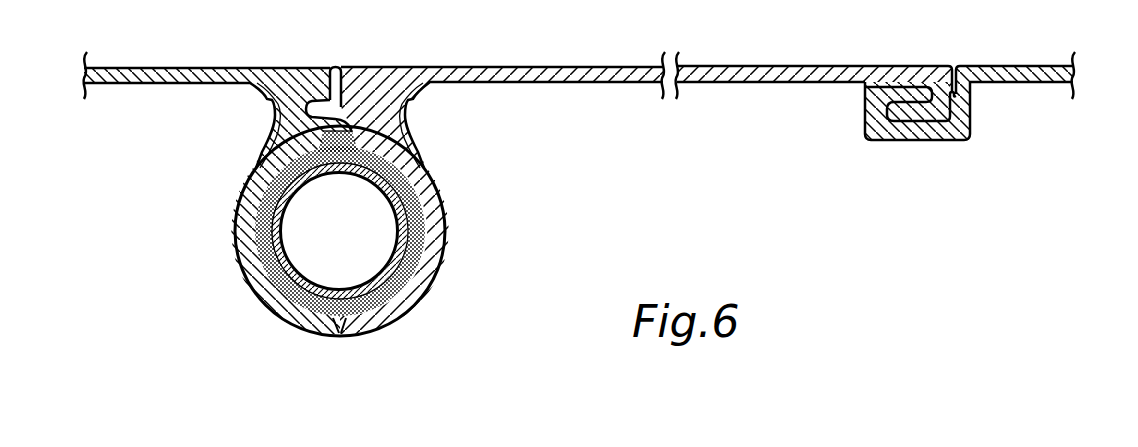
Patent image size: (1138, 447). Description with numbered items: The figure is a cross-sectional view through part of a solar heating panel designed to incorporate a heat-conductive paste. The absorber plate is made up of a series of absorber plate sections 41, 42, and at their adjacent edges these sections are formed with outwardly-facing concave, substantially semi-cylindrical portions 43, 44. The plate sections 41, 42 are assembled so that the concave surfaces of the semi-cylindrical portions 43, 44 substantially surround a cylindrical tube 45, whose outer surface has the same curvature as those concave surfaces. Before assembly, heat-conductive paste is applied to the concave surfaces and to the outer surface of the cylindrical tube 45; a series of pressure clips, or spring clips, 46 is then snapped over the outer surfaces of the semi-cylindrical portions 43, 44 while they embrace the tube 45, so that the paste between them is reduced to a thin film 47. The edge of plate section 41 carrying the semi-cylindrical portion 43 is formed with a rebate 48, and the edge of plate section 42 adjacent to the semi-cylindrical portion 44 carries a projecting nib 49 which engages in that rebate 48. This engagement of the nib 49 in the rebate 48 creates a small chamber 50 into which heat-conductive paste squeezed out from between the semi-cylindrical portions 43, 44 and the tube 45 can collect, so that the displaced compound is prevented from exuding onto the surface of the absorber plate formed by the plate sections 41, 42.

The absorber plate section 41 is at (163, 77).
The absorber plate section 42 is at (566, 68).
The semi-cylindrical portion 43 is at (247, 232).
The semi-cylindrical portion 44 is at (428, 250).
The cylindrical tube 45 is at (305, 288).
The pressure clip 46 is at (310, 328).
The film 47 is at (410, 270).
The rebate 48 is at (302, 108).
The projecting nib 49 is at (324, 108).
The chamber 50 is at (340, 128).